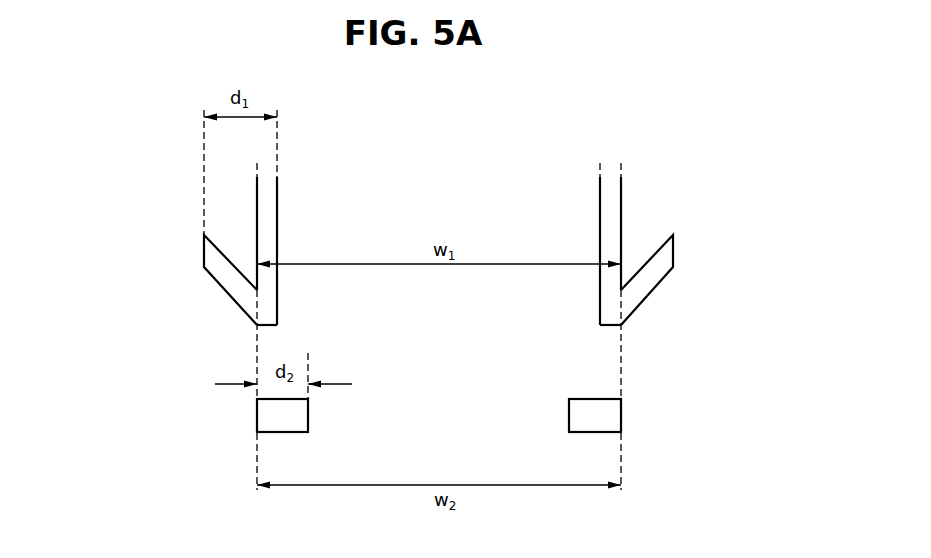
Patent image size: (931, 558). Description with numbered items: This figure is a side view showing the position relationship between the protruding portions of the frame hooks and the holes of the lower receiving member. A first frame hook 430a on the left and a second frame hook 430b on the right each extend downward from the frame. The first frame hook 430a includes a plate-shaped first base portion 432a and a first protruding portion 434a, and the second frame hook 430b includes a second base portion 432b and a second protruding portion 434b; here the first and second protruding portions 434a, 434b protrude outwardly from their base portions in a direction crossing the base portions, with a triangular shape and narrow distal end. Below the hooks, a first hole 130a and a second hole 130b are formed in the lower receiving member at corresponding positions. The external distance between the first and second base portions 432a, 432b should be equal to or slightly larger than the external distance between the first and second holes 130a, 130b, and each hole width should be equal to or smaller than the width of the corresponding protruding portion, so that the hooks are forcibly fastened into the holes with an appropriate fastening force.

The first frame hook 430a is at (116, 190).
The first base portion 432a is at (272, 195).
The first protruding portion 434a is at (205, 266).
The second frame hook 430b is at (762, 190).
The second base portion 432b is at (605, 194).
The second protruding portion 434b is at (672, 262).
The first hole 130a is at (265, 413).
The second hole 130b is at (614, 412).